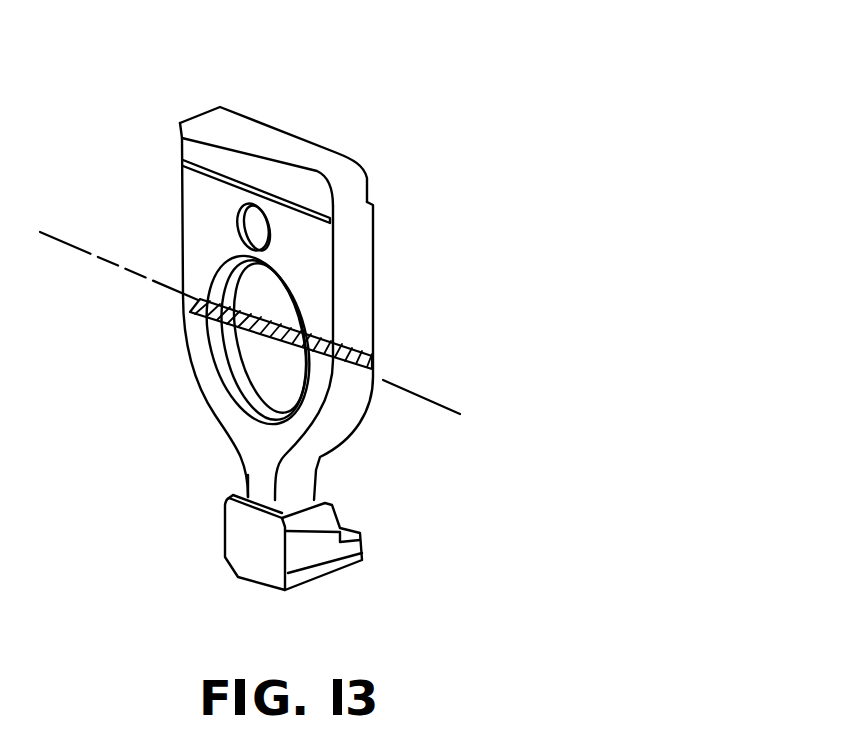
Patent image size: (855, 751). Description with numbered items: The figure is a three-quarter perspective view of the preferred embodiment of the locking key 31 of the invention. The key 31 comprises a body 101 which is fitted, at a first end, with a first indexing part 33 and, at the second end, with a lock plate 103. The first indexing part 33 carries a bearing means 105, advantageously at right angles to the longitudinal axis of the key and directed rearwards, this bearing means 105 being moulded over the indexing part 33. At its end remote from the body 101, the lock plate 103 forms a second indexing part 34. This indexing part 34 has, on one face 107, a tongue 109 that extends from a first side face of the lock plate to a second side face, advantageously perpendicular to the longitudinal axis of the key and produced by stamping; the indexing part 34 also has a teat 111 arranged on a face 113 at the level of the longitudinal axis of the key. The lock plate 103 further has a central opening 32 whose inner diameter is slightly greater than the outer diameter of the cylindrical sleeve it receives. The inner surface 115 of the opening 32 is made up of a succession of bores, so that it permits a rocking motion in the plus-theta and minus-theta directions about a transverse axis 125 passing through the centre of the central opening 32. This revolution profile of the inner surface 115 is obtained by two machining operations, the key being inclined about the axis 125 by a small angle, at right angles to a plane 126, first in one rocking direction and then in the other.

The key 31 is at (343, 72).
The second indexing part 34 is at (347, 147).
The tongue 109 is at (372, 200).
The face 107 is at (373, 250).
The lock plate 103 is at (397, 275).
The face 113 is at (197, 247).
The teat 111 is at (237, 217).
The central opening 32 is at (236, 410).
The inner surface 115 is at (224, 350).
The plane 126 is at (373, 357).
The transverse axis 125 is at (427, 395).
The body 101 is at (345, 479).
The first indexing part 33 is at (245, 580).
The bearing means 105 is at (362, 540).